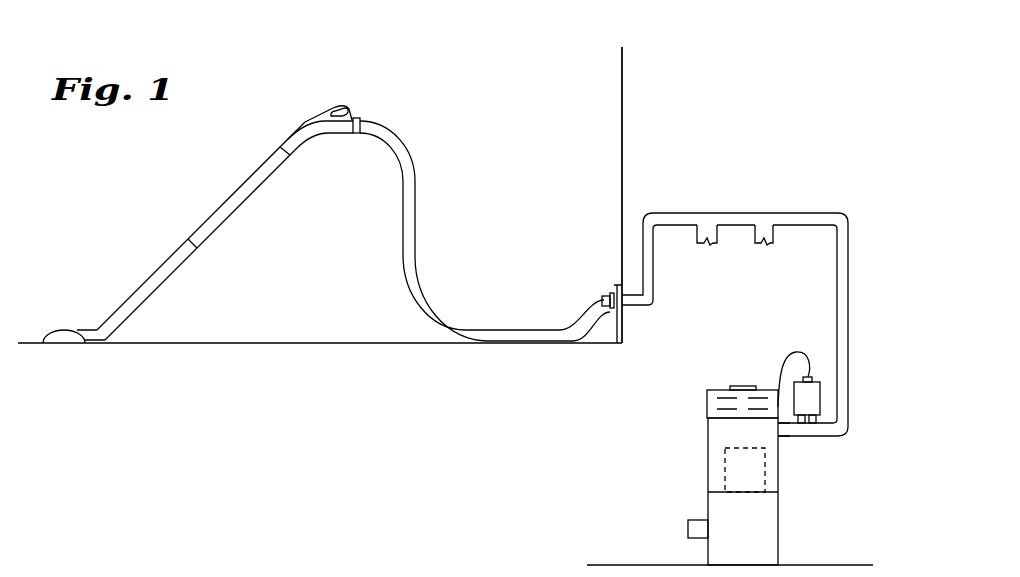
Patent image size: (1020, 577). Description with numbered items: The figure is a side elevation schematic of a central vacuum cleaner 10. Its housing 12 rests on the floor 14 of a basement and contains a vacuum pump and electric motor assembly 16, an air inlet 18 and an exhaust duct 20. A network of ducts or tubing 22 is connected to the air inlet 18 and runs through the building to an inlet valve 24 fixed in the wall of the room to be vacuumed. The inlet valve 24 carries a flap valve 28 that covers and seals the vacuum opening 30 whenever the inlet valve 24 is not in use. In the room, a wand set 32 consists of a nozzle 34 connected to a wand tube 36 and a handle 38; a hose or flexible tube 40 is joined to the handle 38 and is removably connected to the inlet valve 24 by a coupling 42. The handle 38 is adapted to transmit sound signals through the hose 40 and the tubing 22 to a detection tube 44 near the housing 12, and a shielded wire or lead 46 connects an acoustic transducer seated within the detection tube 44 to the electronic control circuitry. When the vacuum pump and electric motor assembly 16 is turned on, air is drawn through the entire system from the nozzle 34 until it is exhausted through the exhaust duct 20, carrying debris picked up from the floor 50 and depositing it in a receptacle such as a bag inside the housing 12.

The central vacuum cleaner 10 is at (645, 48).
The housing 12 is at (775, 528).
The floor 14 is at (640, 565).
The vacuum pump and electric motor assembly 16 is at (706, 468).
The air inlet 18 is at (783, 438).
The exhaust duct 20 is at (697, 520).
The network of ducts or tubing 22 is at (752, 212).
The inlet valve 24 is at (625, 307).
The flap valve 28 is at (612, 292).
The vacuum opening 30 is at (617, 340).
The wand set 32 is at (148, 292).
The nozzle 34 is at (68, 330).
The wand tube 36 is at (225, 230).
The handle 38 is at (294, 132).
The hose 40 is at (412, 206).
The coupling 42 is at (604, 300).
The detection tube 44 is at (810, 399).
The shielded wire or lead 46 is at (777, 363).
The floor 50 is at (322, 343).